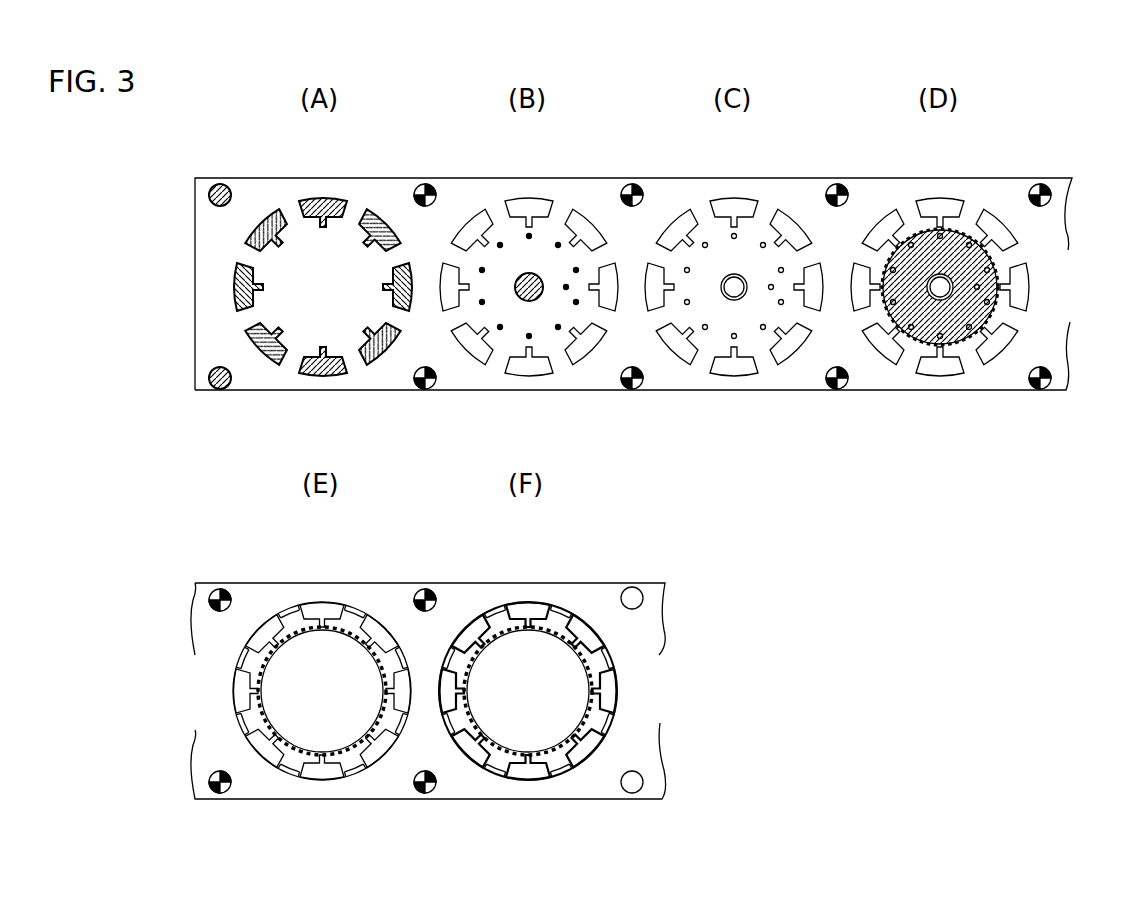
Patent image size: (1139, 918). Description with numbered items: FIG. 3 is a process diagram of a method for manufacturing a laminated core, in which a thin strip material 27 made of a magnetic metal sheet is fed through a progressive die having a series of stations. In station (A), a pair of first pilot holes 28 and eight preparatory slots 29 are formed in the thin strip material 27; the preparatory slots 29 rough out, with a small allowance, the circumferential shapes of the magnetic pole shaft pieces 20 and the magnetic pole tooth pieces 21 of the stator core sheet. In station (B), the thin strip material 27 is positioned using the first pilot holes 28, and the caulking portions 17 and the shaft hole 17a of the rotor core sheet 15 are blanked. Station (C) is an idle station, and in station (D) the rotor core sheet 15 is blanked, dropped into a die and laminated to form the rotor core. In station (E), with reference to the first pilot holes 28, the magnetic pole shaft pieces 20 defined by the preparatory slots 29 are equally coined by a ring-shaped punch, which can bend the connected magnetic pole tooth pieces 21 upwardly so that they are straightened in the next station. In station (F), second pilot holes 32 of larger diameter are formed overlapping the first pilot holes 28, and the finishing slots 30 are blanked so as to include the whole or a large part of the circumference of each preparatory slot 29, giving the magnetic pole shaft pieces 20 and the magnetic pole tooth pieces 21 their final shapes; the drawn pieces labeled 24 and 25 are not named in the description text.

The rotor core sheet 15 is at (993, 258).
The caulking portions 17 is at (499, 328).
The shaft hole 17a is at (536, 300).
The magnetic pole shaft piece 20 is at (616, 718).
The magnetic pole tooth piece 21 is at (588, 662).
The yoke piece 24 is at (328, 655).
The yoke piece 25 is at (352, 612).
The thin strip material 27 is at (546, 178).
The first pilot holes 28 is at (216, 184).
The preparatory slots 29 is at (326, 196).
The finishing slot 30 is at (616, 682).
The second pilot holes 32 is at (632, 587).